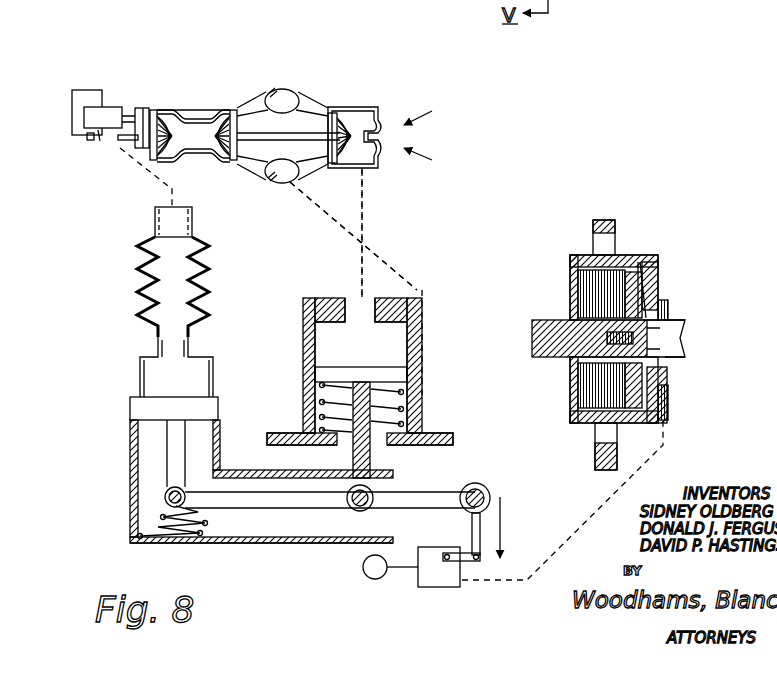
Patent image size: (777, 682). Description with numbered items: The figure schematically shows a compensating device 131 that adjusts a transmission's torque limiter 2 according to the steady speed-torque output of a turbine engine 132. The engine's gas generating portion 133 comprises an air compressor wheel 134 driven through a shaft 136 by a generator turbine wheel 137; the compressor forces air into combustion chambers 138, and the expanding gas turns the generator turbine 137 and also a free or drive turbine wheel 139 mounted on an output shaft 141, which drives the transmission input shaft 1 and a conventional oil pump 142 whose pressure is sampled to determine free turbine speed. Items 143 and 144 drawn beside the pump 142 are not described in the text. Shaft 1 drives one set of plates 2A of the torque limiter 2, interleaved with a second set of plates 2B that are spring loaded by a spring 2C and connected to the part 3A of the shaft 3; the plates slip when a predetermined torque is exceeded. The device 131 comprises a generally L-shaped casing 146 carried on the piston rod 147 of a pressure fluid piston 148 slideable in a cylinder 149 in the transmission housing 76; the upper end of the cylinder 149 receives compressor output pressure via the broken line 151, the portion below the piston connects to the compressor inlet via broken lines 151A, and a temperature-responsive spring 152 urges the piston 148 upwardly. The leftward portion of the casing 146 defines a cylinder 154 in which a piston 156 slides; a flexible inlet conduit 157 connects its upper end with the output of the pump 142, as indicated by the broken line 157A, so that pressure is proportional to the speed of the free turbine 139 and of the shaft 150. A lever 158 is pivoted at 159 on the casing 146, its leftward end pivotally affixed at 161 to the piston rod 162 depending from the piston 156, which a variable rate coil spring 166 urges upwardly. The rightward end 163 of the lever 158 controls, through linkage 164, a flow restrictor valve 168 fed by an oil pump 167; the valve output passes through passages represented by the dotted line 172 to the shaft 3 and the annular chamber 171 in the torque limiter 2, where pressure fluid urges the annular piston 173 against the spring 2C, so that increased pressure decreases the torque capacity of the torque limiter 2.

The shaft 1 is at (545, 337).
The torque limiter 2 is at (588, 428).
The first set of plates 2A is at (592, 394).
The second set of plates 2B is at (578, 376).
The spring 2C is at (650, 285).
The shaft 3 is at (713, 335).
The part of shaft 3 3A is at (672, 333).
The housing or frame structure 76 is at (416, 330).
The compensating device 131 is at (312, 548).
The turbine engine 132 is at (367, 102).
The gas generating portion 133 is at (246, 62).
The air compressor wheel 134 is at (348, 151).
The shaft 136 is at (268, 136).
The generator turbine wheel 137 is at (223, 118).
The combustion chambers 138 is at (290, 97).
The free turbine wheel 139 is at (167, 127).
The output shaft 141 is at (167, 160).
The oil pump 142 is at (93, 108).
The conduit 143 is at (100, 142).
The connection 144 is at (87, 138).
The L-shaped casing 146 is at (246, 543).
The piston rod 147 is at (372, 452).
The pressure fluid piston 148 is at (398, 375).
The cylinder 149 is at (318, 346).
The shaft 150 is at (127, 135).
The broken line 151 is at (360, 270).
The broken lines 151A is at (383, 257).
The spring 152 is at (405, 405).
The cylinder 154 is at (141, 450).
The piston 156 is at (140, 410).
The flexible inlet conduit 157 is at (137, 286).
The broken line 157A is at (172, 206).
The lever 158 is at (415, 502).
The pivot 159 is at (353, 510).
The pivotal connection 161 is at (185, 491).
The piston rod 162 is at (172, 480).
The rightward end of lever 163 is at (480, 484).
The linkage 164 is at (471, 530).
The variable rate coil spring 166 is at (150, 541).
The oil pump 167 is at (383, 580).
The flow restrictor valve 168 is at (445, 588).
The annular chamber 171 is at (656, 418).
The dotted line 172 is at (668, 442).
The annular piston 173 is at (650, 292).